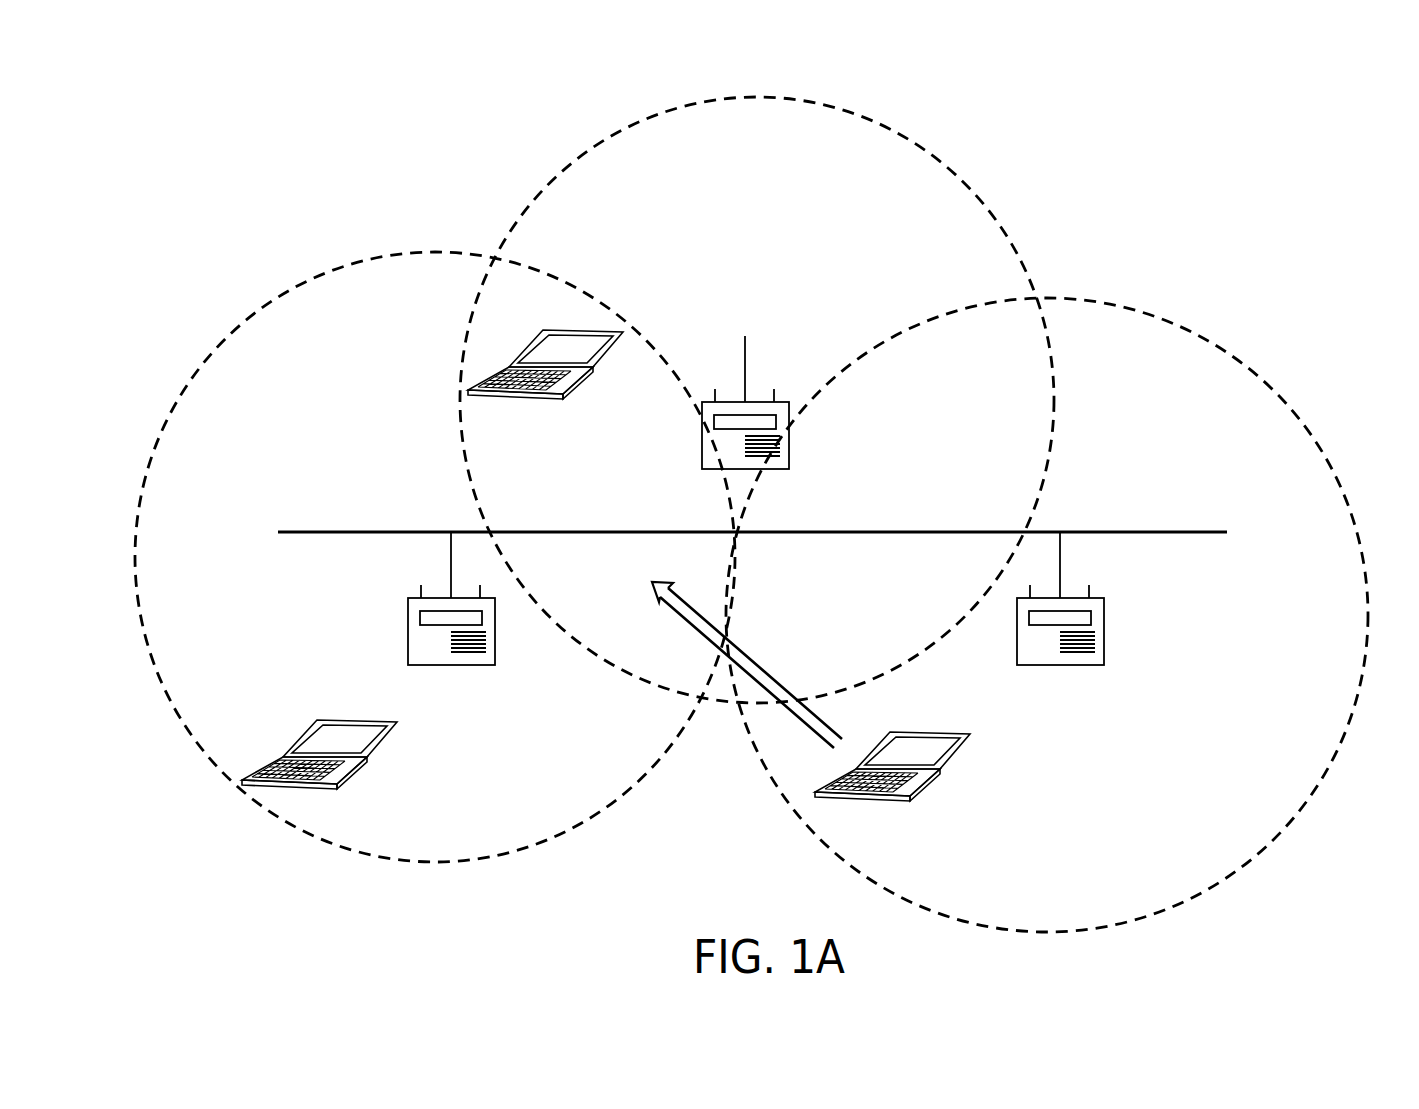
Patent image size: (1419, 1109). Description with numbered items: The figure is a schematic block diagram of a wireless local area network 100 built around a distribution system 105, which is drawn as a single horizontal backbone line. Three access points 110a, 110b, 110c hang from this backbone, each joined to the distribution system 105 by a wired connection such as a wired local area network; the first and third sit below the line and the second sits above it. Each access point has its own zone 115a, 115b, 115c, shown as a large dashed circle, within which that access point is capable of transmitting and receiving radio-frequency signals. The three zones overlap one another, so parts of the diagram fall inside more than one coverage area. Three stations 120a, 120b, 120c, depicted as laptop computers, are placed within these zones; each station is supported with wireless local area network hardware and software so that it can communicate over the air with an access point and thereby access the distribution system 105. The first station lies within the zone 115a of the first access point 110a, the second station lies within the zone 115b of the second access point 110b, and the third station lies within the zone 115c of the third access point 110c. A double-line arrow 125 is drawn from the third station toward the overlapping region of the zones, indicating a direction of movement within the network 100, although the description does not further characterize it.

The wireless local area network 100 is at (1077, 257).
The distribution system 105 is at (1115, 530).
The access point 110a is at (407, 628).
The access point 110b is at (790, 448).
The access point 110c is at (1105, 624).
The zone 115a is at (290, 290).
The zone 115b is at (507, 227).
The zone 115c is at (1190, 334).
The station 120a is at (333, 718).
The station 120b is at (533, 340).
The station 120c is at (905, 732).
The station movement / roaming arrow 125 is at (750, 656).